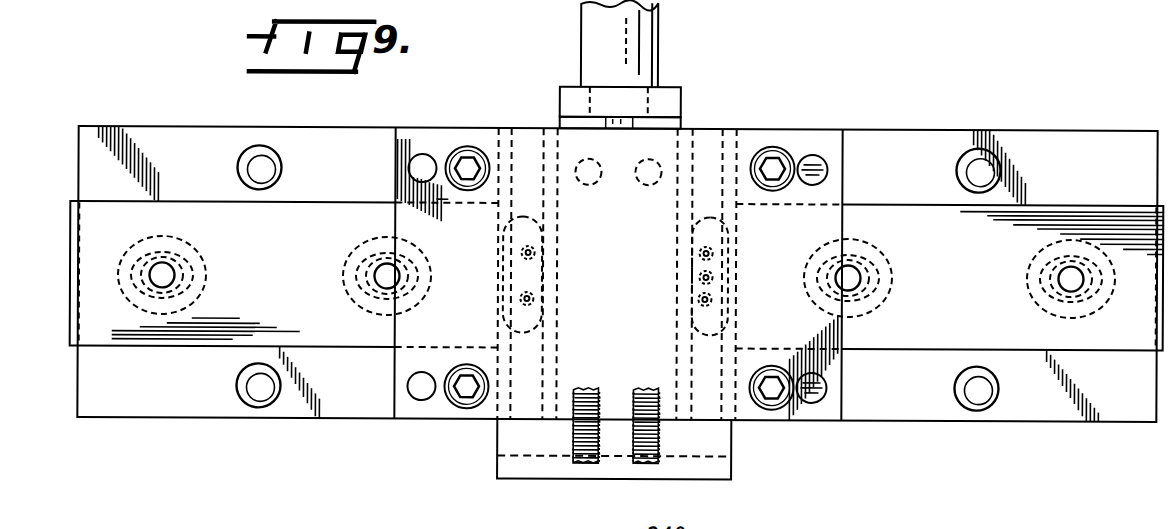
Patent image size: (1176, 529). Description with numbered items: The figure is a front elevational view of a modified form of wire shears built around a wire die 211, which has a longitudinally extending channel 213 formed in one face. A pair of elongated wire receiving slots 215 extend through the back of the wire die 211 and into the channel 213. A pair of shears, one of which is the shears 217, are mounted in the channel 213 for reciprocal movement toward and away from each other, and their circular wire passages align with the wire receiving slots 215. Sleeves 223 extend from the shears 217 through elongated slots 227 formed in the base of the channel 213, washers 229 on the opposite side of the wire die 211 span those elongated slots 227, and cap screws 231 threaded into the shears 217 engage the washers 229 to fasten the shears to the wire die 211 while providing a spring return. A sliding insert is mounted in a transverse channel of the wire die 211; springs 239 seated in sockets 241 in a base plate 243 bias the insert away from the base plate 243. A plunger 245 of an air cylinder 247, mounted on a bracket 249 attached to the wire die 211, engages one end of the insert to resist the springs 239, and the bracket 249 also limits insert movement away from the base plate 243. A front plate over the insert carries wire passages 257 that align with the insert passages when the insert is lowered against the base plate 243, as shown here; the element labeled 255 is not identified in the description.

The wire die 211 is at (328, 418).
The longitudinal extending channel 213 is at (947, 209).
The elongated wire receiving slots 215 is at (540, 224).
The shears 217 is at (68, 318).
The sleeves 223 is at (205, 267).
The elongated slots 227 is at (200, 288).
The washers 229 is at (187, 240).
The cap screws 231 is at (162, 268).
The springs 239 is at (635, 465).
The sockets 241 is at (629, 394).
The base plate 243 is at (712, 480).
The plunger 245 is at (618, 130).
The air cylinder 247 is at (652, 44).
The bracket 249 is at (680, 94).
The center block 255 is at (815, 107).
The wire passages 257 is at (699, 297).